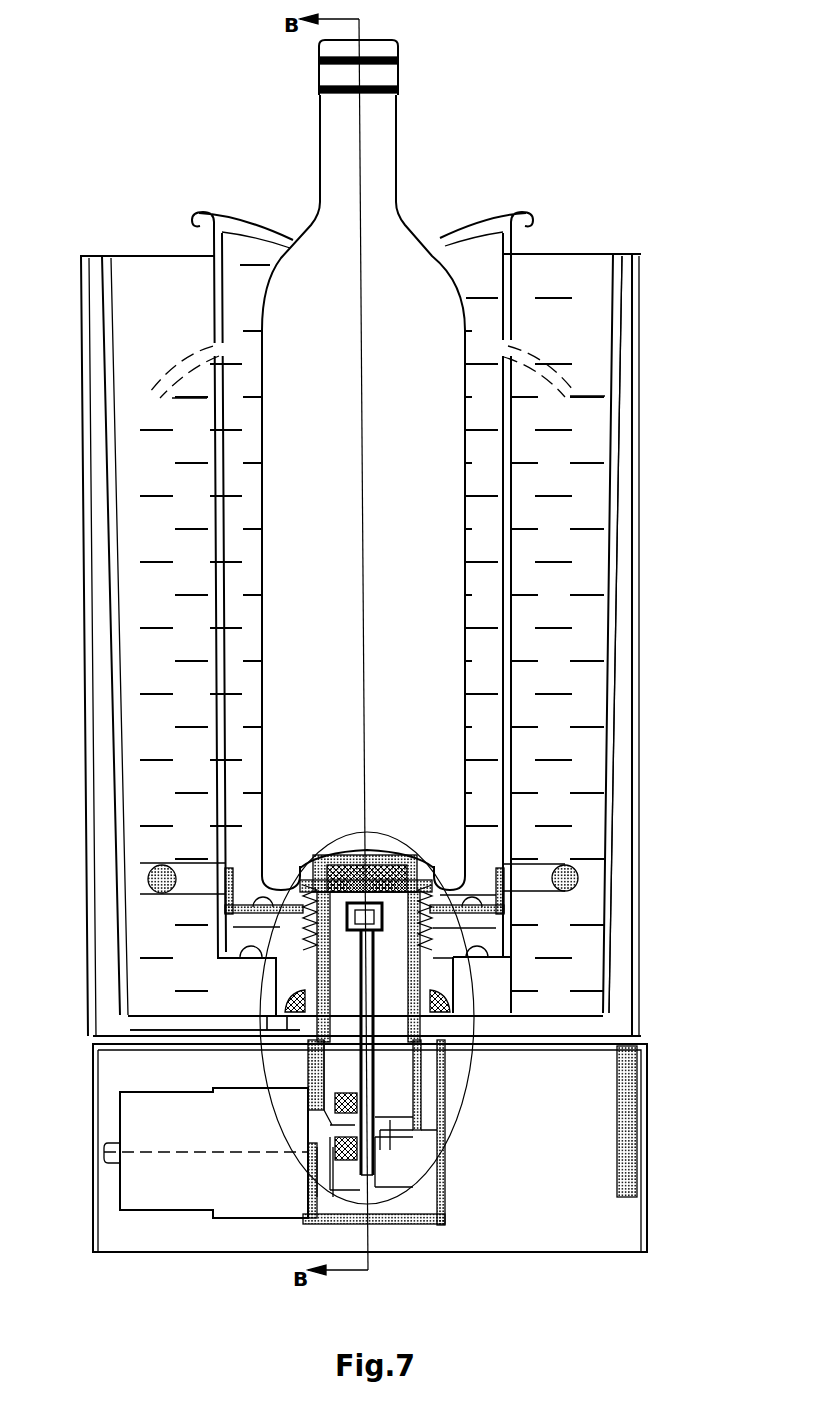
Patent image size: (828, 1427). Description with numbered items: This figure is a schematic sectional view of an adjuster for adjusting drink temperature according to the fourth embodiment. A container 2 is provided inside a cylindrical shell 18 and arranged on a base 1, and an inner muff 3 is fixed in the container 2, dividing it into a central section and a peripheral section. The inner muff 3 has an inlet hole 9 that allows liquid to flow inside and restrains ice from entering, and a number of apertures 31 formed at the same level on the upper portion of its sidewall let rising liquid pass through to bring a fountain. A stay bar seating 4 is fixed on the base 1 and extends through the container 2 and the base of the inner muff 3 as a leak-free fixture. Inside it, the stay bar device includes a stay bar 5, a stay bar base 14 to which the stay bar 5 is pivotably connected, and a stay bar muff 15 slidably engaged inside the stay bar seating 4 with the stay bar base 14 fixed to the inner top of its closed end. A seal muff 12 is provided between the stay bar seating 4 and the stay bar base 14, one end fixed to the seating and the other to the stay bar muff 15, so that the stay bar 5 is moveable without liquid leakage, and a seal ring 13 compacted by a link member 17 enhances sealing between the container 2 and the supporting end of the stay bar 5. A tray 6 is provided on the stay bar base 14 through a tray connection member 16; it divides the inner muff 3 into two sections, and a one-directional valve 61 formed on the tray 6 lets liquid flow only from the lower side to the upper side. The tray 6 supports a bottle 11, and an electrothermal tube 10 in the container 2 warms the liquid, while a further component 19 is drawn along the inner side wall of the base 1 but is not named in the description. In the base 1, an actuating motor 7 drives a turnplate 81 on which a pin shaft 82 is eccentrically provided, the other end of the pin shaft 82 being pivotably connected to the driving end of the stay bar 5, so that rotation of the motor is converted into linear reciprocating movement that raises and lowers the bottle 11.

The base 1 is at (637, 1240).
The container 2 is at (615, 328).
The inner muff 3 is at (522, 210).
The stay bar seating 4 is at (437, 1200).
The stay bar 5 is at (398, 1183).
The tray 6 is at (397, 857).
The actuating motor 7 is at (225, 1118).
The inlet hole 9 is at (500, 947).
The electrothermal tube 10 is at (580, 878).
The bottle 11 is at (375, 190).
The seal muff 12 is at (308, 856).
The seal ring 13 is at (276, 1020).
The stay bar base 14 is at (383, 948).
The stay bar muff 15 is at (404, 1114).
The tray connection member 16 is at (340, 855).
The link member 17 is at (440, 996).
The cylindrical shell 18 is at (636, 337).
The circuit board 19 is at (617, 1118).
The apertures 31 is at (215, 344).
The one-directional valve 61 is at (474, 884).
The turnplate 81 is at (328, 1118).
The pin shaft 82 is at (356, 1190).